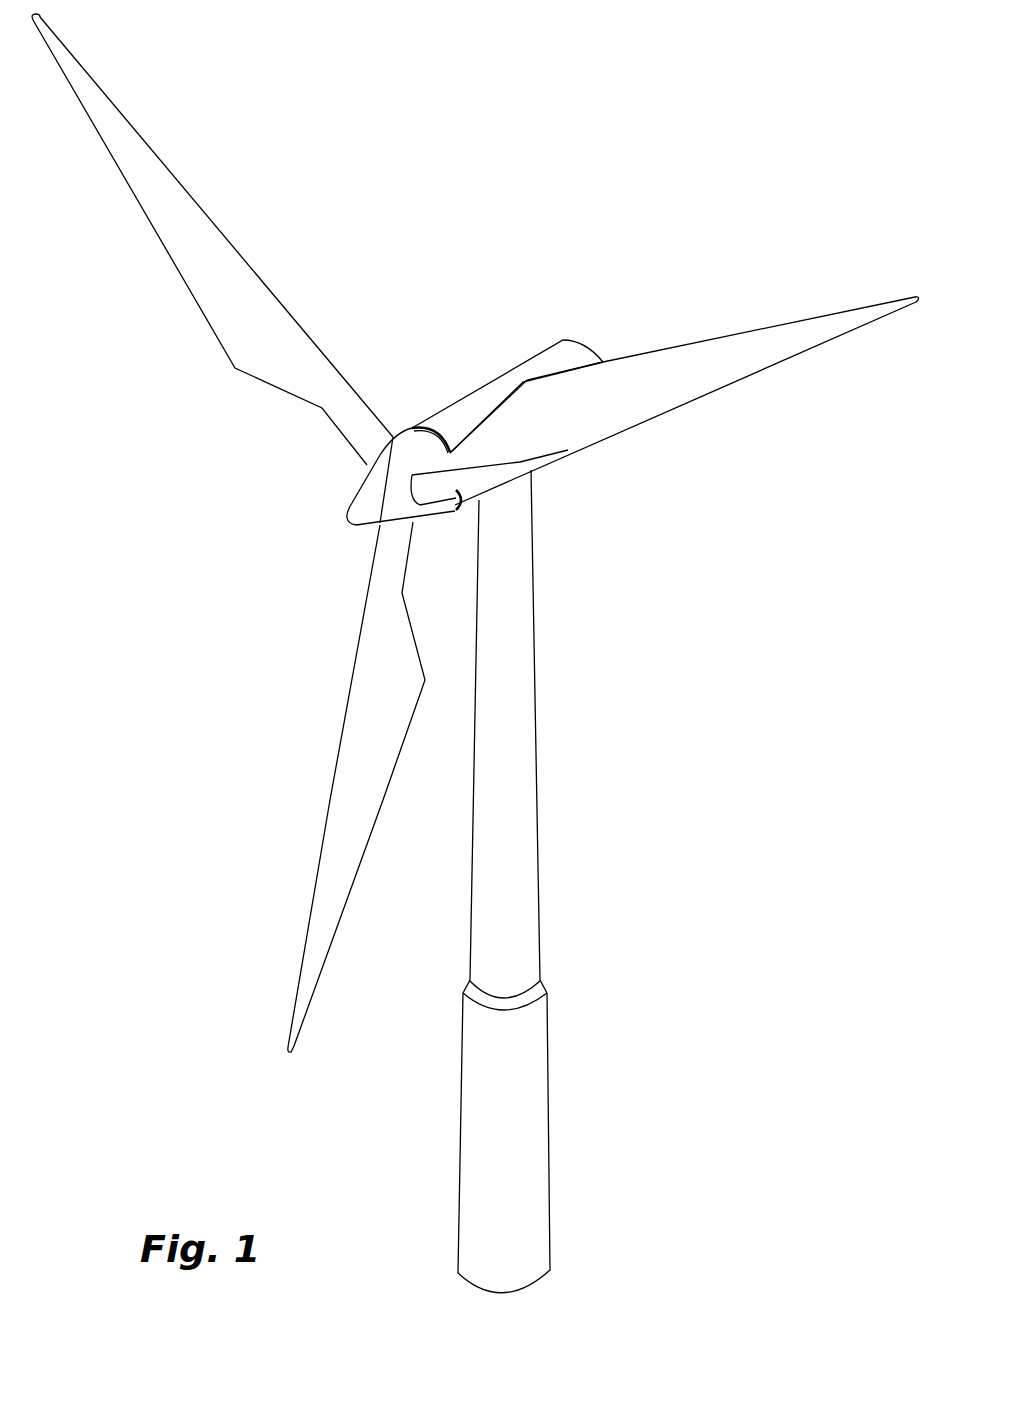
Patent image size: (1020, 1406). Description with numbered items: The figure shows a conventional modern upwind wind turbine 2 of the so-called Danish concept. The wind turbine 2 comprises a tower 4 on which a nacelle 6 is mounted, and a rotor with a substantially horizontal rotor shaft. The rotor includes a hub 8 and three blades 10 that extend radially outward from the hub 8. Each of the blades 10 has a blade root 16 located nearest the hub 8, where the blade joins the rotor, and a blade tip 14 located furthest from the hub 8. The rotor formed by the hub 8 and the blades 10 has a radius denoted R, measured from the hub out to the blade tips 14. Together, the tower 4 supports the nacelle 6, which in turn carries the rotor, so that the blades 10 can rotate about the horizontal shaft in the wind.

The wind turbine 2 is at (640, 813).
The tower 4 is at (523, 730).
The nacelle 6 is at (467, 408).
The hub 8 is at (367, 498).
The blades 10 is at (247, 337).
The blade tip 14 is at (77, 77).
The blade root 16 is at (375, 450).